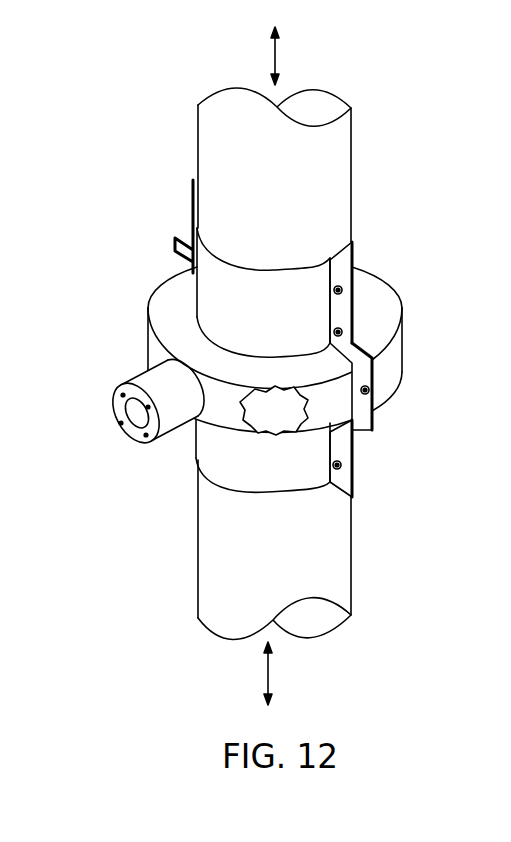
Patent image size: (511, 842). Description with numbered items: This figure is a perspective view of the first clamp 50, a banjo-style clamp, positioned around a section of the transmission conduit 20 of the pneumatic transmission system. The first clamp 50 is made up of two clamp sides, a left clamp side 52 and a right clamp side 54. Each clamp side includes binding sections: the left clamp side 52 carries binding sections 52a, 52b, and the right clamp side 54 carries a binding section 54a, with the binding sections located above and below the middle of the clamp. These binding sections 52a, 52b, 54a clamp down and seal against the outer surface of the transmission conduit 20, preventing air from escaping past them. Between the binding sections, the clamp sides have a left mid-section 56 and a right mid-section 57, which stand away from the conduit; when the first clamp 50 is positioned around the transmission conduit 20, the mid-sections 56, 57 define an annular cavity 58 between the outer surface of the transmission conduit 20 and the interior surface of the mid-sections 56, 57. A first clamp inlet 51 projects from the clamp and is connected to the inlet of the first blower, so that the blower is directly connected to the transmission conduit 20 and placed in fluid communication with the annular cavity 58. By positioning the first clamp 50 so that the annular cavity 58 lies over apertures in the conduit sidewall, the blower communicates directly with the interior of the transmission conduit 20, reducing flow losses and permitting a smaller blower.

The transmission conduit 20 is at (352, 136).
The first clamp 50 is at (273, 314).
The first clamp inlet 51 is at (128, 433).
The left clamp side 52 is at (191, 360).
The binding section 52a is at (260, 314).
The binding section 52b is at (263, 469).
The right clamp side 54 is at (334, 338).
The binding section 54a is at (375, 281).
The left mid-section 56 is at (273, 349).
The right mid-section 57 is at (402, 345).
The annular cavity 58 is at (259, 422).